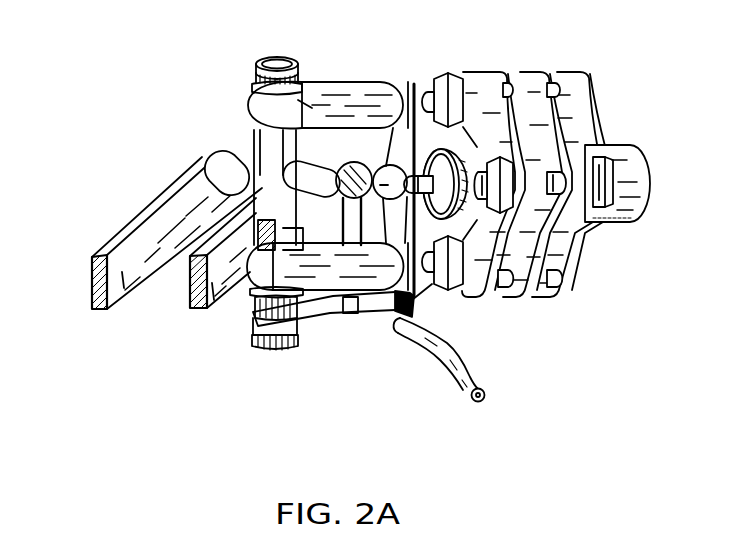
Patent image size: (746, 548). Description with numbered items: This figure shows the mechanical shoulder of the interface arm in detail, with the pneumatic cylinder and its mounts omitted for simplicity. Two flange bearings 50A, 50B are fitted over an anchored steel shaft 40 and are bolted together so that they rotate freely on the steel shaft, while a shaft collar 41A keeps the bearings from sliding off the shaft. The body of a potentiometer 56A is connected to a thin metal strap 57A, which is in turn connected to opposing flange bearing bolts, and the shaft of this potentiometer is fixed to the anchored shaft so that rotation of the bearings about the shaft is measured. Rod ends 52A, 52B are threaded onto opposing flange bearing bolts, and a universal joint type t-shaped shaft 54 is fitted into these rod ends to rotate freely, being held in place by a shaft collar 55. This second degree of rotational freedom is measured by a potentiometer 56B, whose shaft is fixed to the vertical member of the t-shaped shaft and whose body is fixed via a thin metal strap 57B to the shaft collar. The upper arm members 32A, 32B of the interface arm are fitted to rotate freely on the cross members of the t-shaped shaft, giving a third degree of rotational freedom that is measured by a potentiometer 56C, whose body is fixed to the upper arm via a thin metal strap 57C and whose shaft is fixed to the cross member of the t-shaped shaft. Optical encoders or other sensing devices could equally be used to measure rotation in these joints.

The upper arm member 32A is at (117, 312).
The upper arm member 32B is at (213, 310).
The anchored steel shaft 40 is at (607, 222).
The shaft collar 41A is at (503, 74).
The flange bearing 50A is at (512, 133).
The flange bearing 50B is at (572, 134).
The rod end 52A is at (352, 92).
The rod end 52B is at (250, 313).
The t-shaped shaft 54 is at (254, 150).
The shaft collar 55 is at (258, 58).
The potentiometer 56A is at (433, 88).
The potentiometer 56B is at (290, 335).
The potentiometer 56C is at (363, 167).
The thin metal strap 57A is at (416, 138).
The thin metal strap 57B is at (337, 305).
The thin metal strap 57C is at (258, 188).